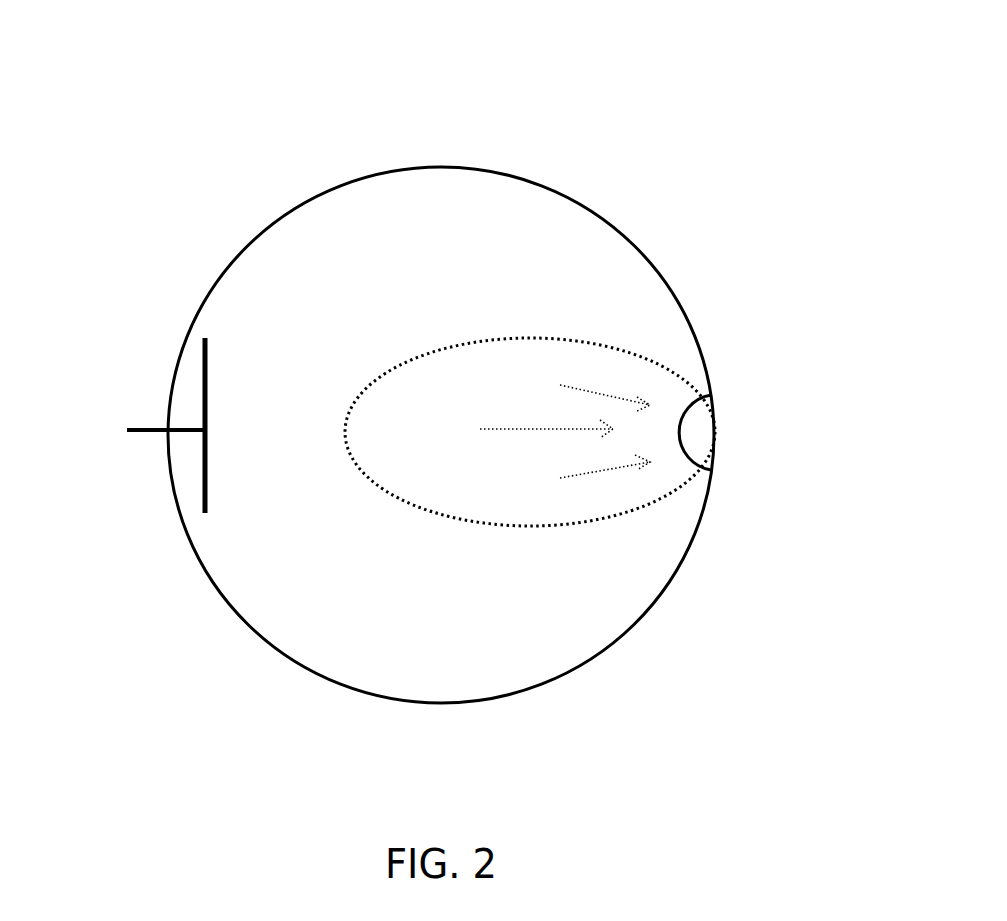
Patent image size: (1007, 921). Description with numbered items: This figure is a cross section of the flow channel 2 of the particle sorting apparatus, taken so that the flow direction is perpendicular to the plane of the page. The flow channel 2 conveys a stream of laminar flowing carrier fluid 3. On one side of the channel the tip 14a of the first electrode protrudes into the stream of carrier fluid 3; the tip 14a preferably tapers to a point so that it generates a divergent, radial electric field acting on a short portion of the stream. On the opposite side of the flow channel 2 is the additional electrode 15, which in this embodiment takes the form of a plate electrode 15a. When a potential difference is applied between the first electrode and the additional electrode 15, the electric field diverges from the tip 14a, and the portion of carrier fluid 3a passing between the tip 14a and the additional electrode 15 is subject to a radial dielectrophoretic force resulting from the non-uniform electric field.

The flow channel 2 is at (565, 192).
The carrier fluid 3 is at (447, 288).
The portion of carrier fluid 3a is at (563, 340).
The tip 14a is at (673, 428).
The additional electrode 15 is at (150, 430).
The plate electrode 15a is at (203, 363).